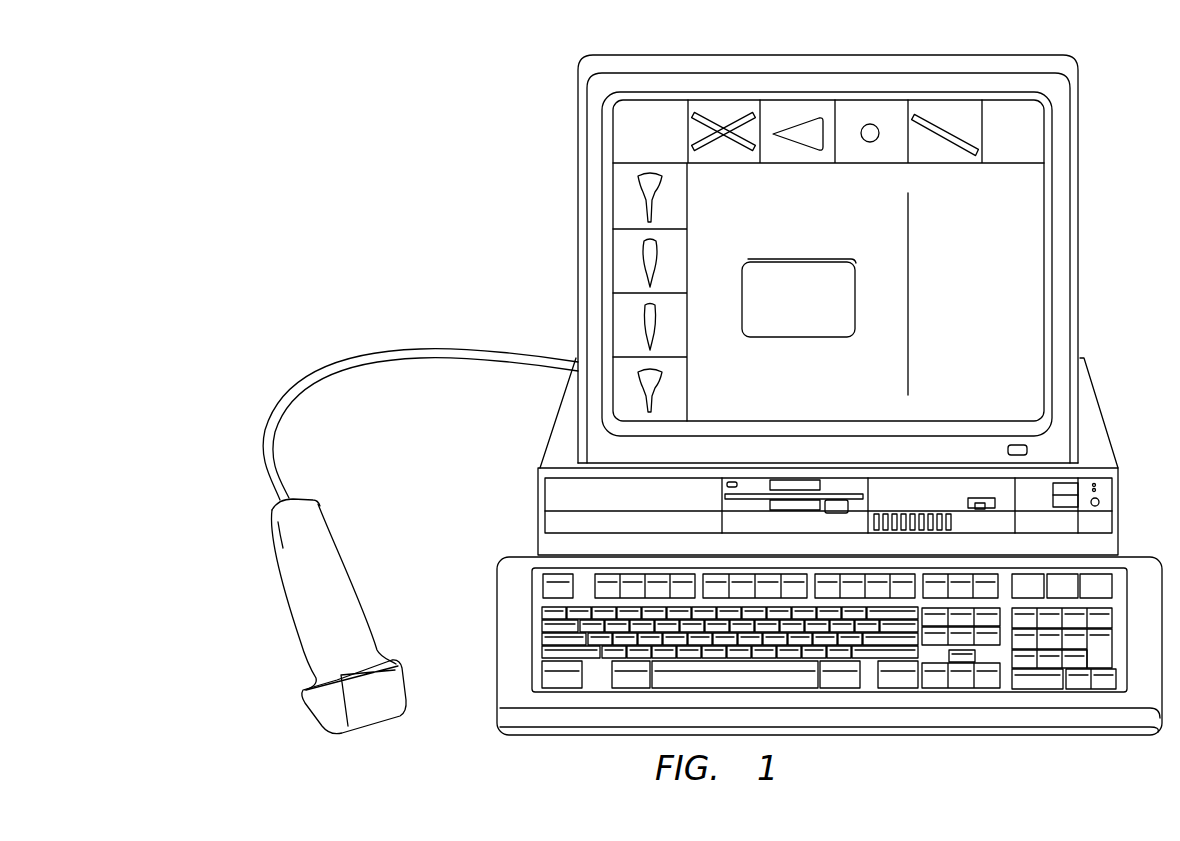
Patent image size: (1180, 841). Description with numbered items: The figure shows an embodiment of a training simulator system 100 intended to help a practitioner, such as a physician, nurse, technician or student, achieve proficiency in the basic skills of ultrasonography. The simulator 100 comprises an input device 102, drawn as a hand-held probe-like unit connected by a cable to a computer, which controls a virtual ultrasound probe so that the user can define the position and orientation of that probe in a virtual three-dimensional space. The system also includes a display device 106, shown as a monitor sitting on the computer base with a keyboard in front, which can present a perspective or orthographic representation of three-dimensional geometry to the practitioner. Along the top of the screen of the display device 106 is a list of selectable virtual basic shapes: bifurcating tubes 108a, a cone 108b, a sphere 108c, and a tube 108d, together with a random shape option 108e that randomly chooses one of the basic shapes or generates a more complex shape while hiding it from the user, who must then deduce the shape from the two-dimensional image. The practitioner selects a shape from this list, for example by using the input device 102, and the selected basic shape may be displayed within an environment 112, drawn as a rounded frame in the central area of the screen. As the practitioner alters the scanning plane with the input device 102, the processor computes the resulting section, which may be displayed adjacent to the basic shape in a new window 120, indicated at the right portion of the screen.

The training simulator system 100 is at (347, 109).
The input device 102 is at (297, 618).
The display device 106 is at (1074, 82).
The bifurcating tubes 108a is at (712, 110).
The cone 108b is at (790, 113).
The sphere 108c is at (873, 112).
The tube 108d is at (946, 113).
The random shape 108e is at (1025, 113).
The environment 112 is at (795, 339).
The new window 120 is at (946, 387).